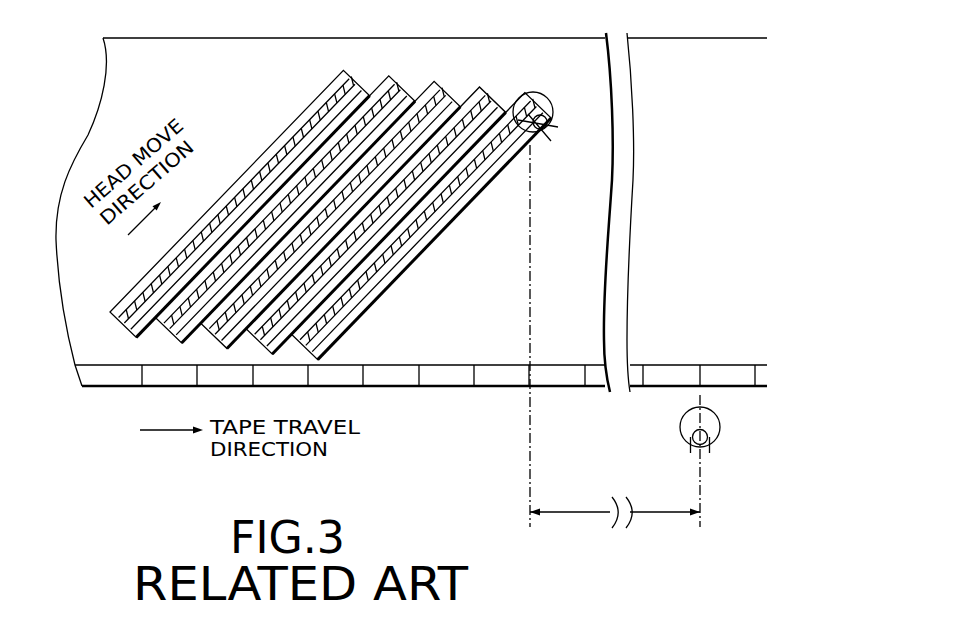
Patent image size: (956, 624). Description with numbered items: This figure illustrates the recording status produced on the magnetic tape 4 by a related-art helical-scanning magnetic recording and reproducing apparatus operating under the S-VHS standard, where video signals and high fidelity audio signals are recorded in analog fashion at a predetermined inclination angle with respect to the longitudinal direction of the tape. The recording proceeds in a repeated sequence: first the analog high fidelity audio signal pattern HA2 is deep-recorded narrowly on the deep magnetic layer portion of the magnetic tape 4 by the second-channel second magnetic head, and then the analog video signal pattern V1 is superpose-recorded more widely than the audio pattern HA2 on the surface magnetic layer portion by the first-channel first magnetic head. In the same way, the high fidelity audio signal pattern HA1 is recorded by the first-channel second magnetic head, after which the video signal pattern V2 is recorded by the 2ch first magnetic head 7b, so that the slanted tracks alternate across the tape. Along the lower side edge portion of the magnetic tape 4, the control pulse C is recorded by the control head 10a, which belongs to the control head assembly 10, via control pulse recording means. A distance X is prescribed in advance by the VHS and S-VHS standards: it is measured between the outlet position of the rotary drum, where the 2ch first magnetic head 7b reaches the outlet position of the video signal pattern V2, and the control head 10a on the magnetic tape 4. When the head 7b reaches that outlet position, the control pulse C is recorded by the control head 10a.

The magnetic tape 4 is at (402, 239).
The analog video signal pattern V1 is at (288, 212).
The video signal pattern V2 is at (339, 212).
The 2ch first magnetic head 7b is at (540, 93).
The high fidelity audio signal pattern HA1 is at (217, 327).
The analog high fidelity audio signal pattern HA2 is at (160, 332).
The control pulse C is at (495, 378).
The control head 10a is at (720, 424).
The control head 10 is at (741, 437).
The distance X is at (615, 336).